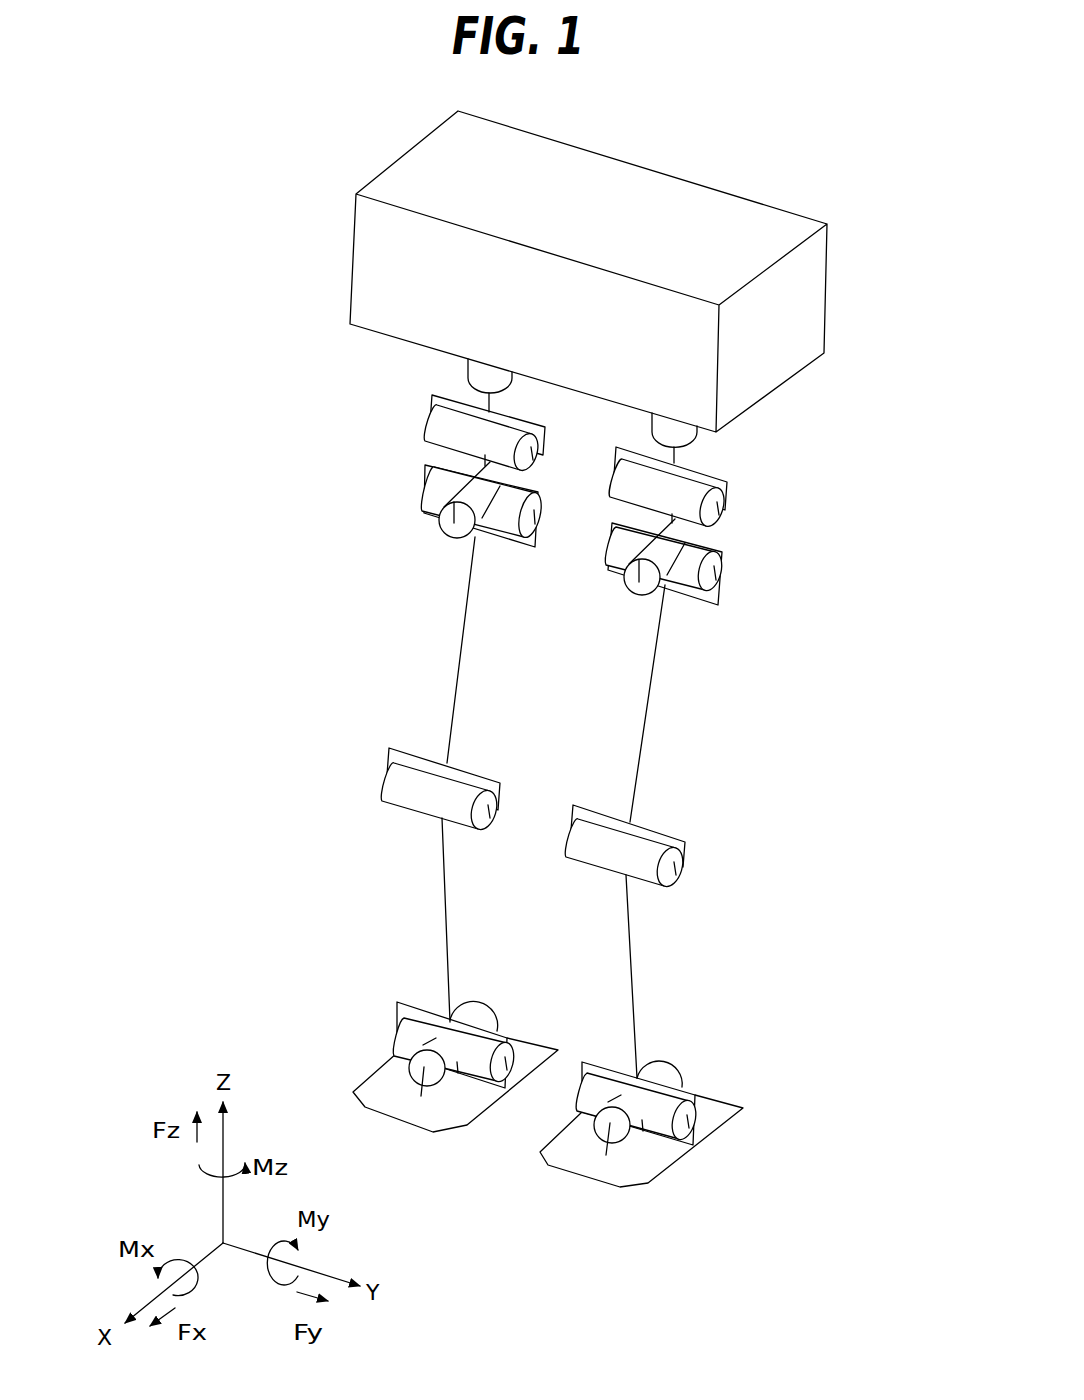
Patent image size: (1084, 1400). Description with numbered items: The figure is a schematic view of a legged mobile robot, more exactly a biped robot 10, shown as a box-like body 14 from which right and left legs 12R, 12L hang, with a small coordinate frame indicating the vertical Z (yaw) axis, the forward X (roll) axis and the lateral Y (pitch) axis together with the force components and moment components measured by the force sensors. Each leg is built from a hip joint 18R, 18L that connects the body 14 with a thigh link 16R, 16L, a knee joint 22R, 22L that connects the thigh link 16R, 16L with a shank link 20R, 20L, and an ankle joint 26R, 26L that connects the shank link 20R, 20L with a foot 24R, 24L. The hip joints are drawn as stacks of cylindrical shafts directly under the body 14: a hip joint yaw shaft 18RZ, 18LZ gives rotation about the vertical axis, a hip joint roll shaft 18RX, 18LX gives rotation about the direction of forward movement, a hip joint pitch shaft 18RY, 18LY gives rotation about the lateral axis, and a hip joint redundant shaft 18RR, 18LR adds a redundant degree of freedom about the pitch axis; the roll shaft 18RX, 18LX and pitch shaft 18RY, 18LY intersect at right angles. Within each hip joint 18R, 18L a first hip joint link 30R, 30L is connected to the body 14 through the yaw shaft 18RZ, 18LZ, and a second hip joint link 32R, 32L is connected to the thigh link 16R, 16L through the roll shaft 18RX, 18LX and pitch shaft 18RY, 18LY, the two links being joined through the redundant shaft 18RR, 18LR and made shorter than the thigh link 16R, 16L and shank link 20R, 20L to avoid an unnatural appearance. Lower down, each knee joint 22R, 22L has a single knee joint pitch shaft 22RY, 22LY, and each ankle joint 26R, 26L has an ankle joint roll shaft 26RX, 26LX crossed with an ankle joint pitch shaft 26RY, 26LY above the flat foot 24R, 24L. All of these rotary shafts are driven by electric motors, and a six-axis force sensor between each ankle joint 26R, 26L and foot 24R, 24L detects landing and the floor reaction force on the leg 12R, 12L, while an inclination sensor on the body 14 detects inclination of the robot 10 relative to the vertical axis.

The biped robot 10 is at (847, 206).
The body 14 is at (672, 192).
The right leg 12R is at (388, 713).
The left leg 12L is at (700, 742).
The right hip joint 18R is at (413, 540).
The left hip joint 18L is at (735, 615).
The right hip joint yaw shaft 18RZ is at (468, 376).
The left hip joint yaw shaft 18LZ is at (703, 440).
The right hip joint redundant shaft 18RR is at (432, 430).
The left hip joint redundant shaft 18LR is at (727, 516).
The right hip joint pitch shaft 18RY is at (425, 475).
The left hip joint pitch shaft 18LY is at (726, 558).
The right hip joint roll shaft 18RX is at (455, 540).
The left hip joint roll shaft 18LX is at (633, 596).
The first right hip joint link 30R is at (494, 401).
The first left hip joint link 30L is at (678, 455).
The second right hip joint link 32R is at (483, 461).
The second left hip joint link 32L is at (660, 521).
The right thigh link 16R is at (455, 675).
The left thigh link 16L is at (652, 680).
The right knee joint 22R is at (368, 760).
The left knee joint 22L is at (702, 827).
The right knee joint pitch shaft 22RY is at (387, 805).
The left knee joint pitch shaft 22LY is at (677, 872).
The right shank link 20R is at (443, 920).
The left shank link 20L is at (633, 973).
The right ankle joint 26R is at (388, 1001).
The left ankle joint 26L is at (710, 1080).
The right ankle joint roll shaft 26RX is at (478, 1006).
The left ankle joint roll shaft 26LX is at (670, 1065).
The right ankle joint pitch shaft 26RY is at (398, 1040).
The left ankle joint pitch shaft 26LY is at (692, 1113).
The right foot 24R is at (446, 1118).
The left foot 24L is at (650, 1168).